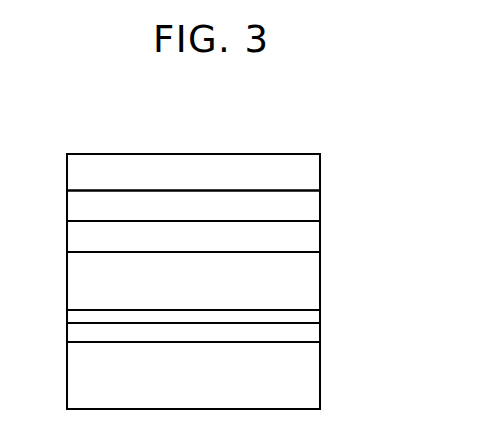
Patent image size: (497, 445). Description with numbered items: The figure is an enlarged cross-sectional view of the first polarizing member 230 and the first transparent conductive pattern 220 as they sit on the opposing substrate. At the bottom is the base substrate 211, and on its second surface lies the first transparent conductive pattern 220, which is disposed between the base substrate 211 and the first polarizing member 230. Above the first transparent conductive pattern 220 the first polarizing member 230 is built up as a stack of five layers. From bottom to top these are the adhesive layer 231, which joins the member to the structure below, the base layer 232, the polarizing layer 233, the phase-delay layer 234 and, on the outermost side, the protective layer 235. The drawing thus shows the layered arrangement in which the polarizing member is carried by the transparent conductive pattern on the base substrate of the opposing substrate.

The base substrate 211 is at (313, 377).
The first transparent conductive pattern 220 is at (313, 335).
The first polarizing member 230 is at (251, 240).
The adhesive layer 231 is at (313, 315).
The base layer 232 is at (313, 282).
The polarizing layer 233 is at (313, 239).
The phase-delay layer 234 is at (313, 208).
The protective layer 235 is at (227, 172).